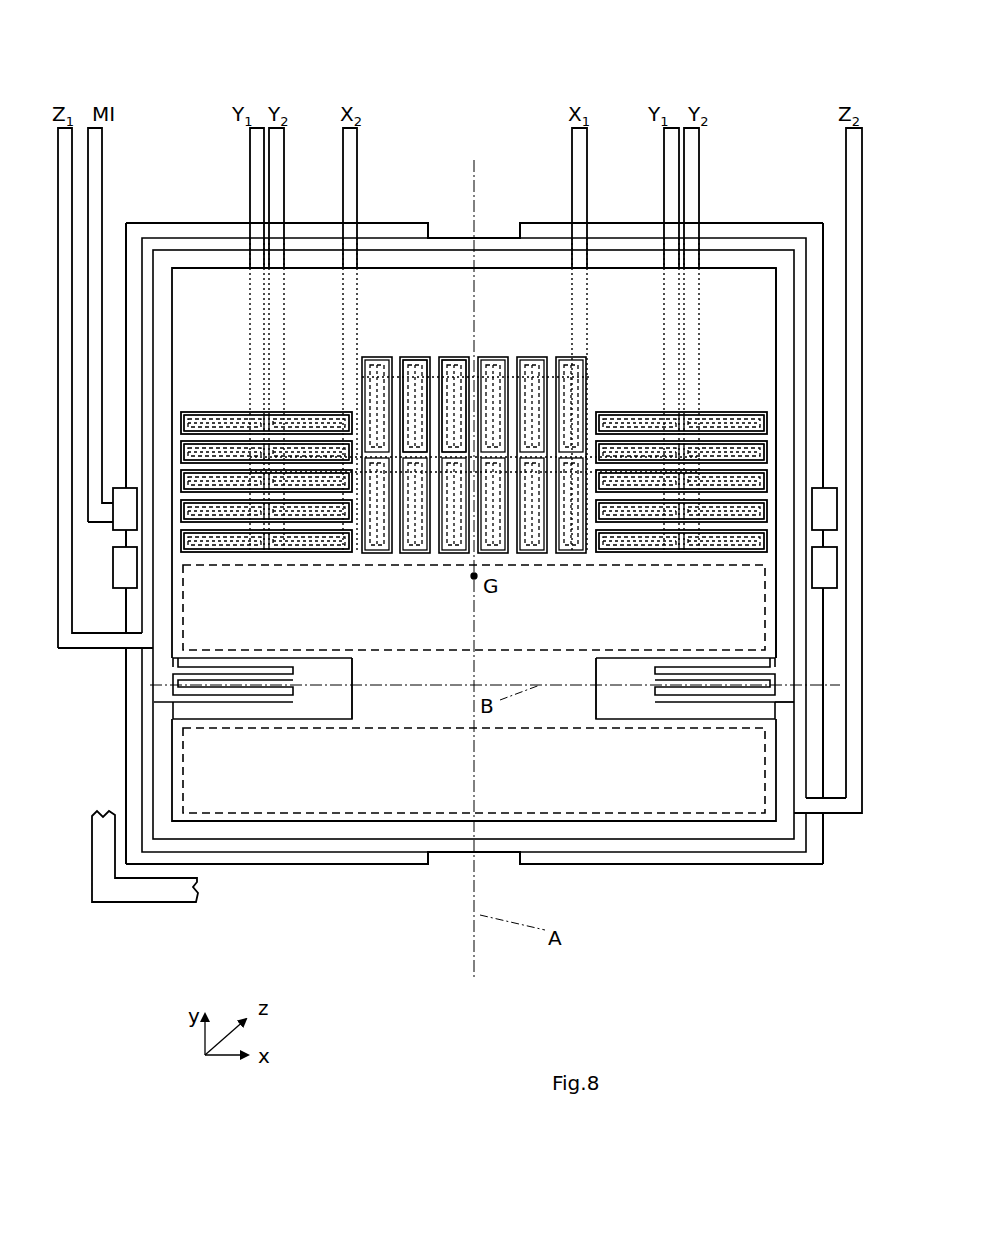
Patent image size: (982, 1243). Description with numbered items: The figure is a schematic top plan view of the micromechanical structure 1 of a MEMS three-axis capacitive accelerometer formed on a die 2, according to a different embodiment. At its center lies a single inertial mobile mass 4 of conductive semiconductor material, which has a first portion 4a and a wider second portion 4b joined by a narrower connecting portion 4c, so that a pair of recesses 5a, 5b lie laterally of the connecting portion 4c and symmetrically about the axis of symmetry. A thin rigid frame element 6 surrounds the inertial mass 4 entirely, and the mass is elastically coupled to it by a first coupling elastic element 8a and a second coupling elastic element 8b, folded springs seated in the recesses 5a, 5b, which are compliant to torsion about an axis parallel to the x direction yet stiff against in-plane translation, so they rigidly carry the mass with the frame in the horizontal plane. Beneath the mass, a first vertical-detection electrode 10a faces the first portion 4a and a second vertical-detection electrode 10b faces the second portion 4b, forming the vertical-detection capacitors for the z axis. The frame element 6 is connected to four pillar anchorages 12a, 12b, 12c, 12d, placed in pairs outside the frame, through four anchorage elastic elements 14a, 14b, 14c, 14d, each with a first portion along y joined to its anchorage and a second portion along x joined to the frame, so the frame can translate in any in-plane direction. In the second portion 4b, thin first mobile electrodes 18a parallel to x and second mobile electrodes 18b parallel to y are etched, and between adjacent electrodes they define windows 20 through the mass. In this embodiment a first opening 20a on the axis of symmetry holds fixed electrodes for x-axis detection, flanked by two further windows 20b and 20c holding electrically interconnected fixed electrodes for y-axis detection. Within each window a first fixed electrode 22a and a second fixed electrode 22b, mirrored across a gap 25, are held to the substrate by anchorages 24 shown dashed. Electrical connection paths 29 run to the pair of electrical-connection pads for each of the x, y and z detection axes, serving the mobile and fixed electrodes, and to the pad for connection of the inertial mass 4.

The micromechanical structure 1 is at (178, 106).
The die 2 is at (118, 880).
The inertial mobile mass 4 is at (496, 285).
The first portion 4a is at (757, 820).
The second portion 4b is at (750, 285).
The connecting portion 4c is at (597, 672).
The recess 5a is at (352, 720).
The recess 5b is at (598, 720).
The frame element 6 is at (460, 222).
The first coupling elastic element 8a is at (165, 703).
The second coupling elastic element 8b is at (762, 703).
The first vertical-detection electrode 10a is at (190, 780).
The second vertical-detection electrode 10b is at (210, 640).
The anchorage 12a is at (120, 565).
The anchorage 12b is at (820, 570).
The anchorage 12c is at (820, 510).
The anchorage 12d is at (125, 505).
The anchorage elastic element 14a is at (258, 868).
The anchorage elastic element 14b is at (703, 868).
The anchorage elastic element 14c is at (725, 222).
The anchorage elastic element 14d is at (318, 222).
The first mobile electrodes 18a is at (312, 445).
The second mobile electrodes 18b is at (430, 358).
The window 20 is at (207, 420).
The first opening 20a is at (405, 556).
The window 20b is at (252, 556).
The window 20c is at (640, 415).
The first fixed electrode 22a is at (335, 440).
The second fixed electrode 22b is at (250, 440).
The anchorage 24 is at (745, 420).
The gap 25 is at (205, 505).
The electrical connection paths 29 is at (255, 185).